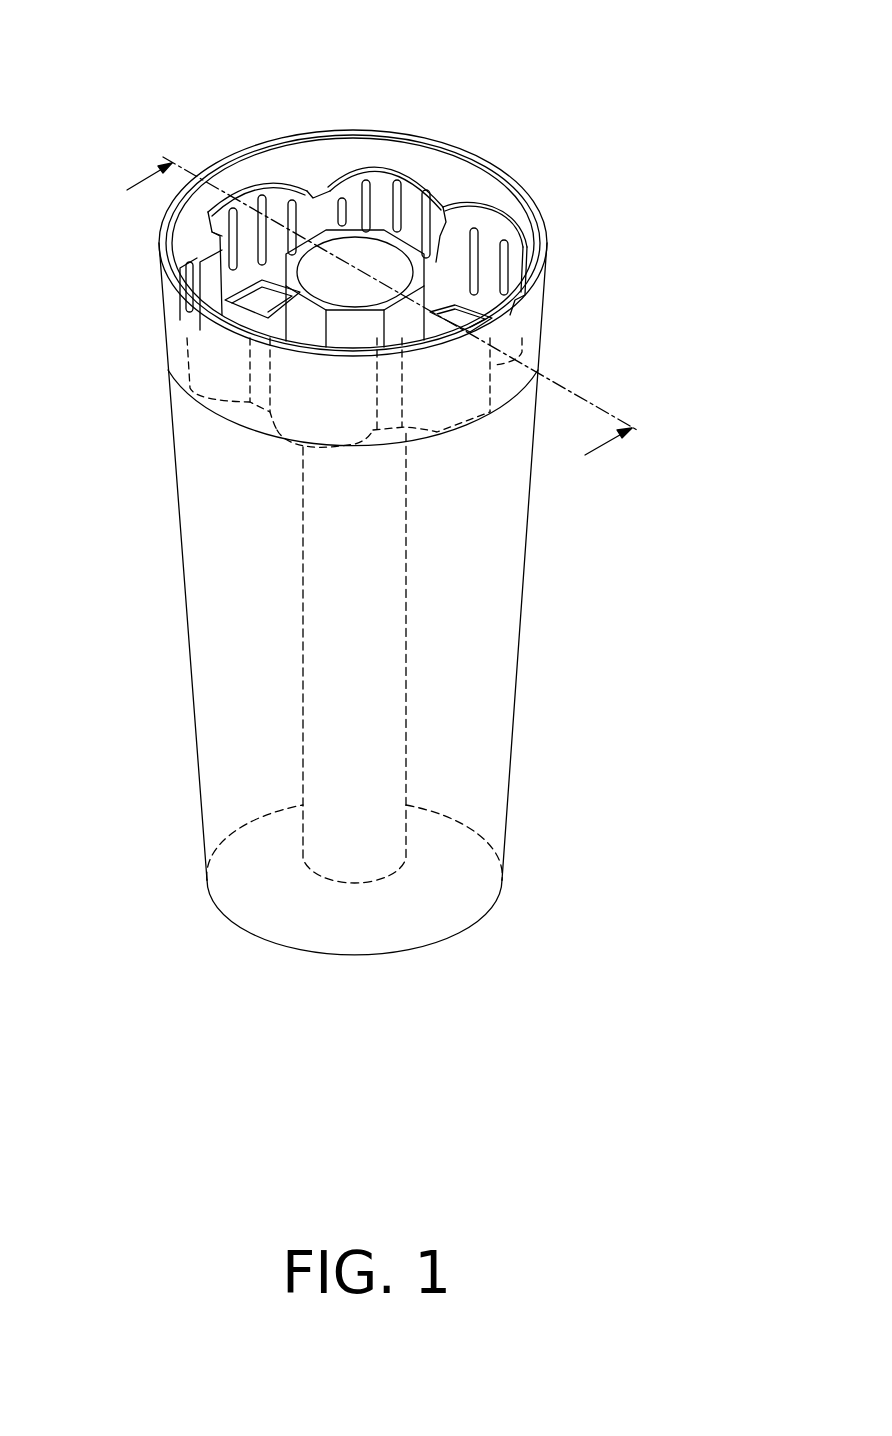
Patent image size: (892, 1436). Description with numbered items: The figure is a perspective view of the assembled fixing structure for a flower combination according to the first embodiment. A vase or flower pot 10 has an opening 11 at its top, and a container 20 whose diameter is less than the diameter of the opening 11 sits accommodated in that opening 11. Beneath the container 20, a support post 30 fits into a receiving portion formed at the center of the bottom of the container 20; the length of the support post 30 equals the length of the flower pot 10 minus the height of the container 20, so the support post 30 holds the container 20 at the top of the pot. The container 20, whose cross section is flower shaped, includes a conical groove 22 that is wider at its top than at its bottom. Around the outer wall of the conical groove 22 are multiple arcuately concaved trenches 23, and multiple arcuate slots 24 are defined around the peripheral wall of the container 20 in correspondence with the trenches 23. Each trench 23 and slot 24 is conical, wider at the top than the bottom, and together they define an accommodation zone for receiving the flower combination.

The flower pot 10 is at (512, 676).
The opening 11 is at (503, 203).
The container 20 is at (396, 193).
The conical groove 22 is at (335, 248).
The arcuately concaved trench 23 is at (380, 228).
The arcuate slot 24 is at (424, 183).
The support post 30 is at (303, 685).